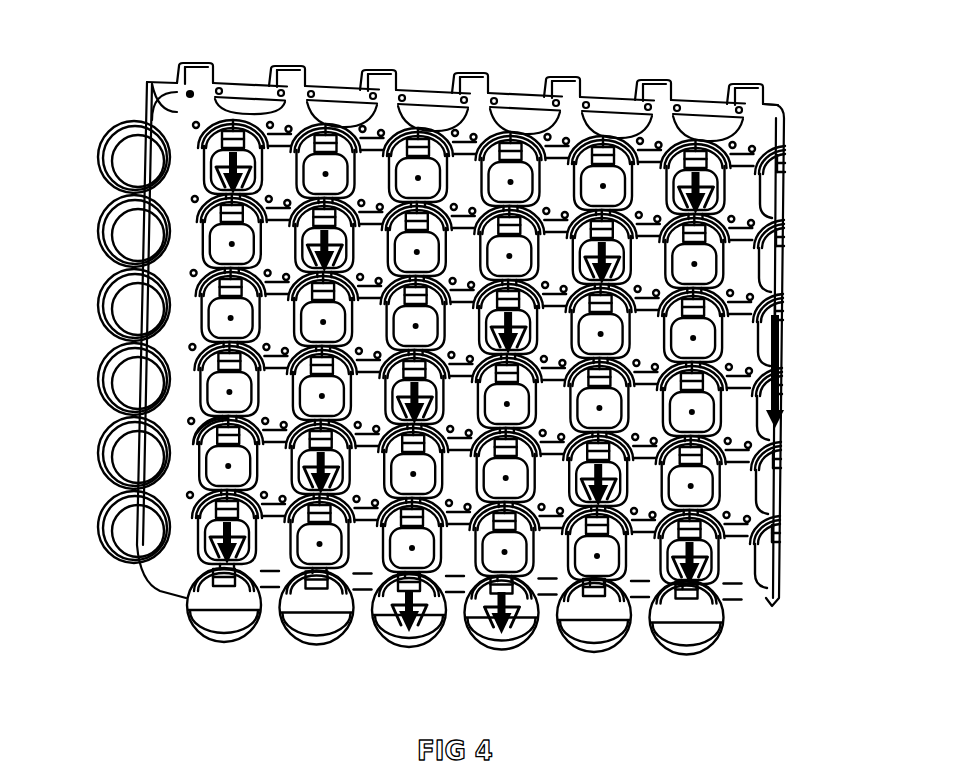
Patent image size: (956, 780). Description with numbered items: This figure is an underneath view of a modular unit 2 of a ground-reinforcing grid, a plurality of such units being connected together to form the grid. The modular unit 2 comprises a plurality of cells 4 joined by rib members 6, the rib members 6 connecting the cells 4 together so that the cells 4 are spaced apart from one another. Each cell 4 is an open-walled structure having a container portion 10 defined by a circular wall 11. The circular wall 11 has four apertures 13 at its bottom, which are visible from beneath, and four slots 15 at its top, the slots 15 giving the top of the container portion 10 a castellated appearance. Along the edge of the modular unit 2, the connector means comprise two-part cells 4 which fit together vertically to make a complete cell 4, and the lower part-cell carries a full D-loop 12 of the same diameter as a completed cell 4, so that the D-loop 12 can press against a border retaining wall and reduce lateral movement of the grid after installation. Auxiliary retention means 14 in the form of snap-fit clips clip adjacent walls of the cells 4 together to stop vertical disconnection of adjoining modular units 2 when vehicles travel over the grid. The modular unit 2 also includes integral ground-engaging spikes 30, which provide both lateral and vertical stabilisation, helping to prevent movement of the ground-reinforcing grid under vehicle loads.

The modular unit 2 is at (735, 67).
The cells 4 is at (766, 558).
The rib members 6 is at (180, 510).
The container portion 10 is at (600, 180).
The circular wall 11 is at (212, 437).
The D-loop 12 is at (108, 275).
The apertures 13 is at (572, 590).
The auxiliary retention means 14 is at (464, 88).
The slots 15 is at (182, 80).
The ground-engaging spikes 30 is at (500, 340).